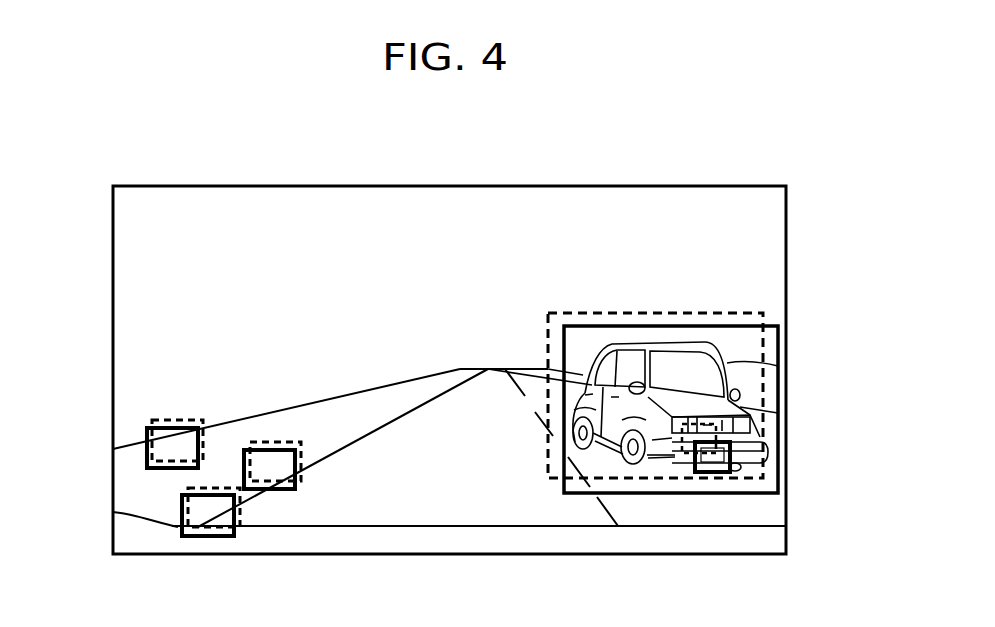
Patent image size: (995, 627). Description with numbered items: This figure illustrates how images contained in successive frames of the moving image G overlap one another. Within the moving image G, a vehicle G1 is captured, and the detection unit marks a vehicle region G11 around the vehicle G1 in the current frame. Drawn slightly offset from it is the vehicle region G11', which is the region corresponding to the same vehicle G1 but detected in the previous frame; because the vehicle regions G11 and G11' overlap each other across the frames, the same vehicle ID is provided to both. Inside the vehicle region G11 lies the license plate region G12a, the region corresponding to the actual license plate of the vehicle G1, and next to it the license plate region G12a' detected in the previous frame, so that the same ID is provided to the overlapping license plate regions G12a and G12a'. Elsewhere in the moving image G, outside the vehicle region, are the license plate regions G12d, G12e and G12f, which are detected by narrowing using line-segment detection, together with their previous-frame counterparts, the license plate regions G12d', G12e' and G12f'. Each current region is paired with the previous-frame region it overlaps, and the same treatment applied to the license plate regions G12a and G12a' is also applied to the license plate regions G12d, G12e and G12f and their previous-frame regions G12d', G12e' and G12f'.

The moving image G is at (709, 174).
The vehicle G1 is at (778, 366).
The vehicle region G11 is at (706, 409).
The vehicle region G11' is at (655, 376).
The license plate region G12a is at (778, 457).
The license plate region G12a' is at (707, 512).
The license plate region G12d is at (211, 547).
The license plate region G12d' is at (229, 429).
The license plate region G12e is at (280, 525).
The license plate region G12e' is at (287, 424).
The license plate region G12f is at (115, 450).
The license plate region G12f' is at (170, 414).